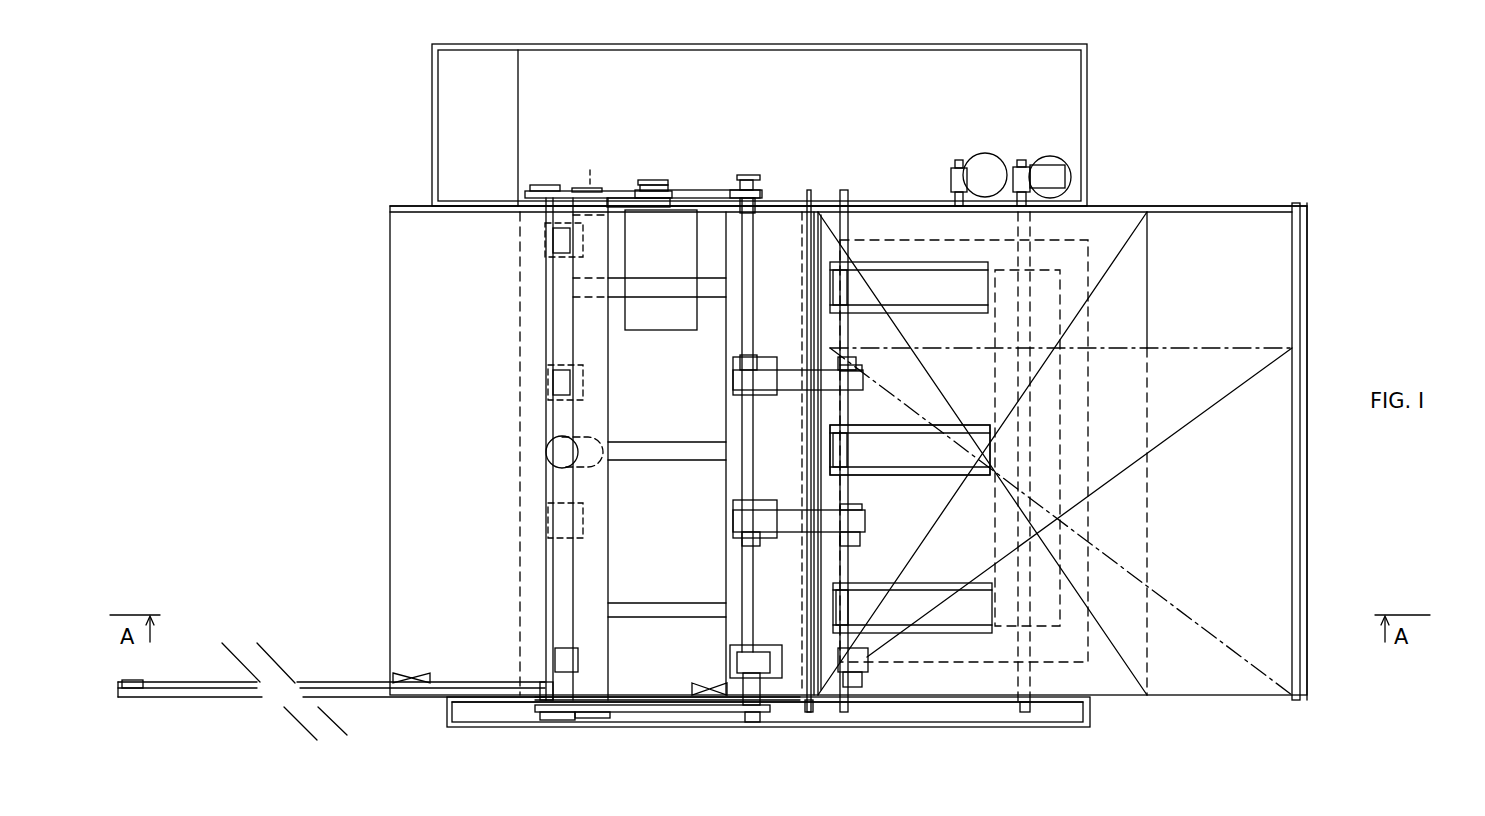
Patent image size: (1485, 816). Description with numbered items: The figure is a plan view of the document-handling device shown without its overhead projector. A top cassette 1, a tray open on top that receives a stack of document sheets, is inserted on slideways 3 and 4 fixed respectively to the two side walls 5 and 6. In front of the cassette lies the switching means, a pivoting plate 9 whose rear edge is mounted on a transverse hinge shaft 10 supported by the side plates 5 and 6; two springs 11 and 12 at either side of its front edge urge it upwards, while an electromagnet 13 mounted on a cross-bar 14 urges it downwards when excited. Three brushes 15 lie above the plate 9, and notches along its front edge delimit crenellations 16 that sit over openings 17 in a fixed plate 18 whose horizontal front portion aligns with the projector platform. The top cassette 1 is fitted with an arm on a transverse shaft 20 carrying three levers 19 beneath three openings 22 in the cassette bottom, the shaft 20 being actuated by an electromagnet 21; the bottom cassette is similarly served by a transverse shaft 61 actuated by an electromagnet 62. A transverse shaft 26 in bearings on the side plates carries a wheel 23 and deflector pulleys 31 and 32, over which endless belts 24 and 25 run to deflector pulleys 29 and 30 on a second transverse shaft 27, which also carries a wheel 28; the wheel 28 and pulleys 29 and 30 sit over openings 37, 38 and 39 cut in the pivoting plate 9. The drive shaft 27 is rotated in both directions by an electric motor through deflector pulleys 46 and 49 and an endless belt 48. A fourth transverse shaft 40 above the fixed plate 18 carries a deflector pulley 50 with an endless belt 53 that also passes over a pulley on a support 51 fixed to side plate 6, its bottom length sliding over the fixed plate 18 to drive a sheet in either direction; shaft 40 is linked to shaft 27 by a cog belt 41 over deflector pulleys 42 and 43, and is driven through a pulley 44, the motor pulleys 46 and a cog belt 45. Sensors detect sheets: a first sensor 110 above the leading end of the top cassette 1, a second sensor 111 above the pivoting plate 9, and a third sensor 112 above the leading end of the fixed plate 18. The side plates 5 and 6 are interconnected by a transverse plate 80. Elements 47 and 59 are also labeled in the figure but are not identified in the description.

The top cassette 1 is at (1225, 697).
The slideway 3 is at (866, 228).
The slideway 4 is at (945, 668).
The side wall 5 is at (897, 207).
The side wall 6 is at (935, 702).
The pivoting plate 9 is at (656, 550).
The transverse shaft 10 is at (810, 190).
The spring 11 is at (620, 192).
The spring 12 is at (595, 718).
The electromagnet 13 is at (548, 452).
The cross-bar 14 is at (598, 422).
The brushes 15 is at (637, 305).
The crenellations 16 is at (560, 240).
The openings 17 is at (545, 258).
The fixed plate 18 is at (466, 361).
The levers 19 is at (880, 433).
The transverse shaft 20 is at (1028, 712).
The electromagnet 21 is at (1048, 160).
The openings 22 is at (960, 265).
The wheel 23 is at (870, 660).
The endless belt 24 is at (865, 520).
The endless belt 25 is at (868, 375).
The transverse shaft 26 is at (846, 190).
The drive shaft 27 is at (753, 275).
The wheel 28 is at (765, 652).
The deflector pulley 29 is at (755, 355).
The deflector pulley 30 is at (760, 540).
The deflector pulley 31 is at (850, 355).
The deflector pulley 32 is at (862, 540).
The opening 37 is at (733, 372).
The opening 38 is at (733, 512).
The opening 39 is at (730, 648).
The fourth transverse shaft 40 is at (556, 580).
The cog belt 41 is at (650, 712).
The deflector pulley 42 is at (750, 712).
The deflector pulley 43 is at (545, 720).
The pulley 44 is at (545, 185).
The cog belt 45 is at (585, 188).
The deflector pulley 46 is at (655, 180).
The housing 47 is at (666, 296).
The endless belt 48 is at (707, 190).
The deflector pulley 49 is at (752, 175).
The deflector pulley 50 is at (540, 690).
The support 51 is at (350, 697).
The endless belt 53 is at (208, 697).
The end stop 59 is at (140, 682).
The transverse shaft 61 is at (955, 165).
The electromagnet 62 is at (988, 160).
The transverse plate 80 is at (866, 50).
The first sensor 110 is at (812, 712).
The second sensor 111 is at (714, 668).
The third sensor 112 is at (420, 673).